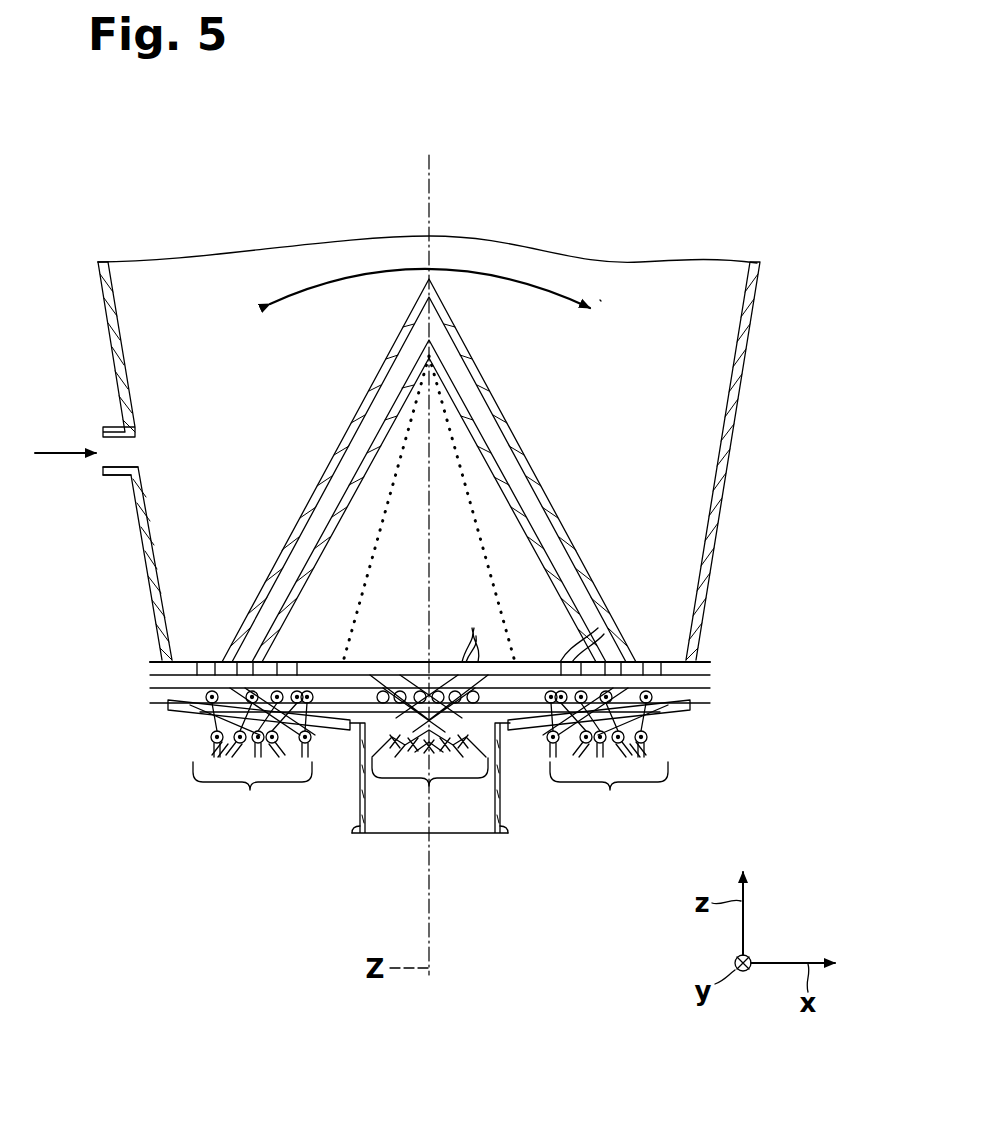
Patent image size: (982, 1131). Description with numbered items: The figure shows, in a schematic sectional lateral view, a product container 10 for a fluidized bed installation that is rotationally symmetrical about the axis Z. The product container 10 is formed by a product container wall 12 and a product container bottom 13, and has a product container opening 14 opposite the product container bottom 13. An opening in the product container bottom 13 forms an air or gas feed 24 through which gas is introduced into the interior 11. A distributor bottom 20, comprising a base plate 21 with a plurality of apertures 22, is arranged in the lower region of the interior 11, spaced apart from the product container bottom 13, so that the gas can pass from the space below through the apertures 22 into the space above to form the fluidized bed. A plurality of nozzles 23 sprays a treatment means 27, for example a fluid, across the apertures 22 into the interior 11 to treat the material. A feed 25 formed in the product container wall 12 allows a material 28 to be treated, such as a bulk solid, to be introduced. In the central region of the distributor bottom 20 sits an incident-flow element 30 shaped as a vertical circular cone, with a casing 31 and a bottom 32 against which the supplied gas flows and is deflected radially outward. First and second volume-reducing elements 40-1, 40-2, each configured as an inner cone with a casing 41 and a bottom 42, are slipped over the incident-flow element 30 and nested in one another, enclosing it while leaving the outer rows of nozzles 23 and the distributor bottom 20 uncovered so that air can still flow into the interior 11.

The product container 10 is at (203, 197).
The interior 11 is at (682, 298).
The product container wall 12 is at (748, 360).
The product container bottom 13 is at (172, 718).
The product container opening 14 is at (490, 262).
The distributor bottom 20 is at (195, 657).
The base plate 21 is at (682, 663).
The apertures 22 is at (598, 628).
The nozzles 23 is at (732, 738).
The air or gas feed 24 is at (472, 834).
The feed 25 is at (105, 477).
The treatment means 27 is at (473, 628).
The material to be treated 28 is at (57, 450).
The incident-flow element 30 is at (508, 590).
The convex casing 31 is at (487, 535).
The planar bottom 32 is at (365, 662).
The first volume-reducing element 40-1 is at (507, 466).
The second volume-reducing element 40-2 is at (494, 373).
The casing 41 is at (462, 338).
The bottom 42 is at (248, 662).